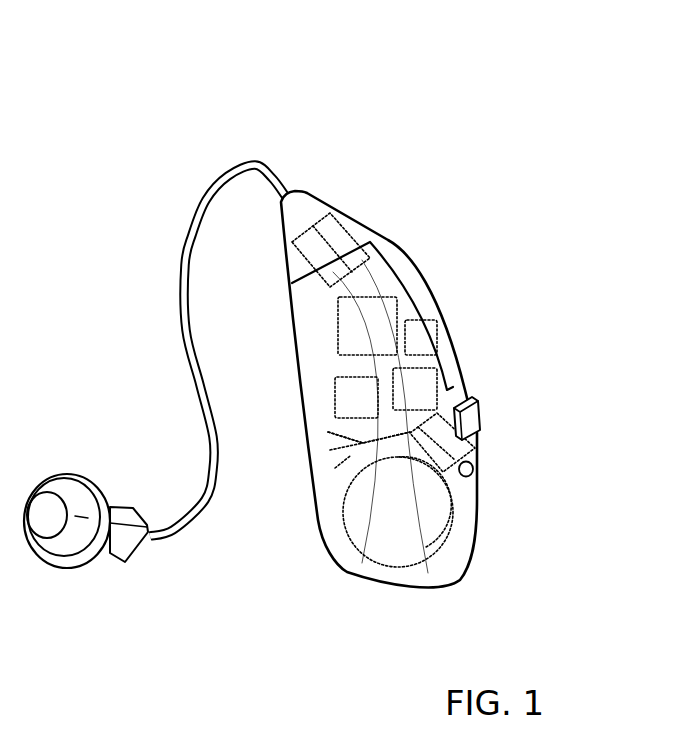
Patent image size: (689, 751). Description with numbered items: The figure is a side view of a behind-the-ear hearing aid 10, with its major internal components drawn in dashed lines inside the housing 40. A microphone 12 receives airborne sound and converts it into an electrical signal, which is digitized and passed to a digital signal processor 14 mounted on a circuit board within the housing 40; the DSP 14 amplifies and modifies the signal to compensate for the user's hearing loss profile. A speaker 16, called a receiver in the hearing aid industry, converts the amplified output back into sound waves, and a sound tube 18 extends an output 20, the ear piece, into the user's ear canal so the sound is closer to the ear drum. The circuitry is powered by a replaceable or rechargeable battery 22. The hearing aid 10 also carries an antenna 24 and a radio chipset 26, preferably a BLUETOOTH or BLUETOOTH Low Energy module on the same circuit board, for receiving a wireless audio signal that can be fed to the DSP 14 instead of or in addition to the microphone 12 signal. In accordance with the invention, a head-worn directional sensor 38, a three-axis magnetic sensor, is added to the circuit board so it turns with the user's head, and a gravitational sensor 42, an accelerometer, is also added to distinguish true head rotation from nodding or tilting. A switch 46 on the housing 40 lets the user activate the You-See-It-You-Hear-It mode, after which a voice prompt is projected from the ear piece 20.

The hearing aid 10 is at (348, 214).
The microphone 12 is at (423, 415).
The digital signal processor 14 is at (357, 337).
The speaker 16 is at (307, 217).
The sound tube 18 is at (202, 190).
The output 20 is at (40, 517).
The battery 22 is at (390, 563).
The antenna 24 is at (347, 460).
The chipset 26 is at (336, 401).
The directional sensor 38 is at (443, 378).
The housing 40 is at (388, 241).
The gravitational sensor 42 is at (421, 321).
The switch 46 is at (470, 418).